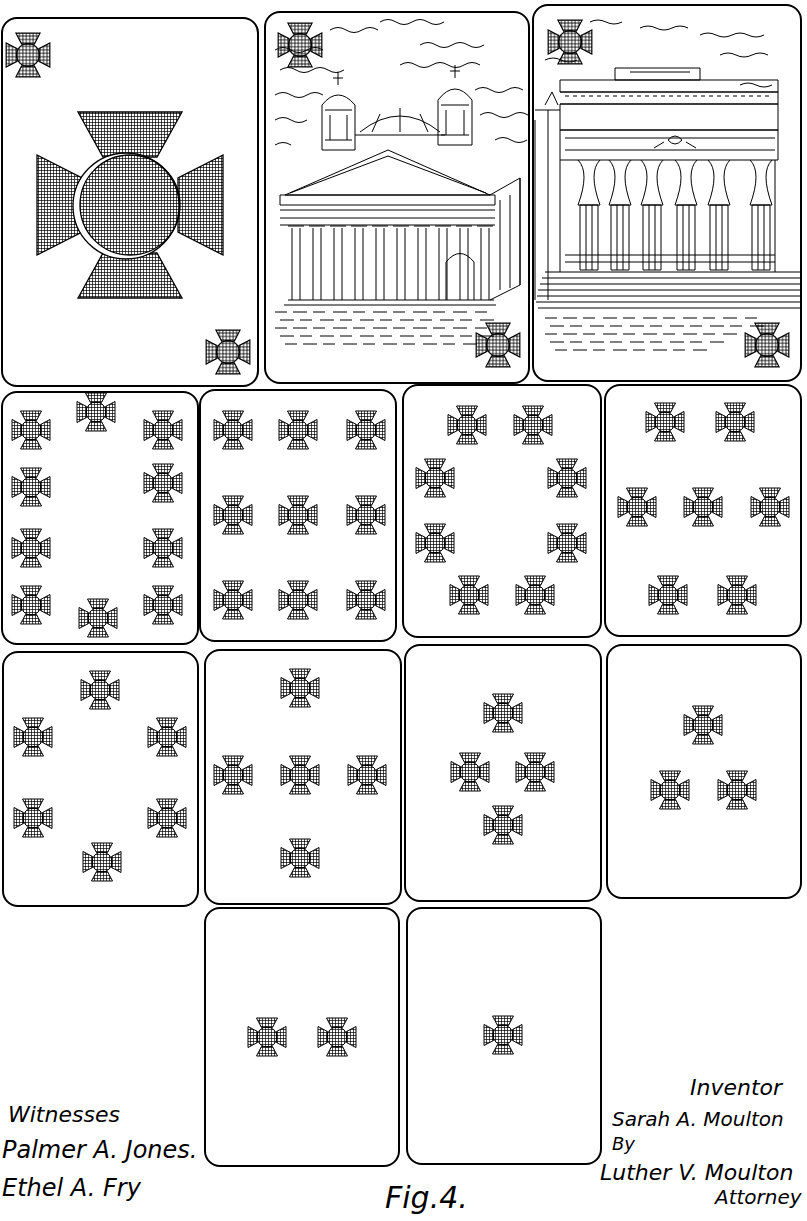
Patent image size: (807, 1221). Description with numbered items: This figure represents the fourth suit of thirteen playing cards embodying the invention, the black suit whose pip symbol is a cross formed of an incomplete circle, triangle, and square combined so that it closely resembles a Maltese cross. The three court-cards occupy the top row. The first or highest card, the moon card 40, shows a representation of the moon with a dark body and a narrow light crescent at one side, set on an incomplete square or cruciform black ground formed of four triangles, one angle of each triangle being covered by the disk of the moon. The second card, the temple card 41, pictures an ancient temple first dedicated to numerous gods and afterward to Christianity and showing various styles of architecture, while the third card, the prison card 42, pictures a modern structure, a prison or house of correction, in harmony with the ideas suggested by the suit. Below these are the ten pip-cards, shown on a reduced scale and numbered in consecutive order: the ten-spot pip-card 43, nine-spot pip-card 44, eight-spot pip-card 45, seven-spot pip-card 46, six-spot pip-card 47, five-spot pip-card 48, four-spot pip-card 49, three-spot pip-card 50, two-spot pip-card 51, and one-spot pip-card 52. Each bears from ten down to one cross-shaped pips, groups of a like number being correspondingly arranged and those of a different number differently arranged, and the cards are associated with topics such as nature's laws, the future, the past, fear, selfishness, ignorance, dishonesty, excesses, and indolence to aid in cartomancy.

The moon card 40 is at (122, 376).
The temple card 41 is at (400, 373).
The prison card 42 is at (668, 371).
The ten-spot pip-card 43 is at (112, 590).
The nine-spot pip-card 44 is at (316, 572).
The eight-spot pip-card 45 is at (517, 572).
The seven-spot pip-card 46 is at (718, 568).
The six-spot pip-card 47 is at (115, 832).
The five-spot pip-card 48 is at (310, 831).
The four-spot pip-card 49 is at (520, 877).
The three-spot pip-card 50 is at (704, 771).
The two-spot pip-card 51 is at (302, 1037).
The one-spot pip-card 52 is at (504, 1036).